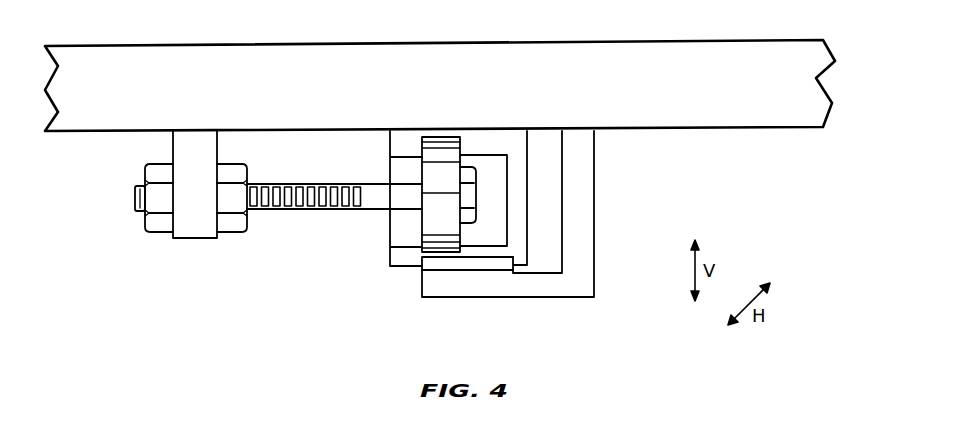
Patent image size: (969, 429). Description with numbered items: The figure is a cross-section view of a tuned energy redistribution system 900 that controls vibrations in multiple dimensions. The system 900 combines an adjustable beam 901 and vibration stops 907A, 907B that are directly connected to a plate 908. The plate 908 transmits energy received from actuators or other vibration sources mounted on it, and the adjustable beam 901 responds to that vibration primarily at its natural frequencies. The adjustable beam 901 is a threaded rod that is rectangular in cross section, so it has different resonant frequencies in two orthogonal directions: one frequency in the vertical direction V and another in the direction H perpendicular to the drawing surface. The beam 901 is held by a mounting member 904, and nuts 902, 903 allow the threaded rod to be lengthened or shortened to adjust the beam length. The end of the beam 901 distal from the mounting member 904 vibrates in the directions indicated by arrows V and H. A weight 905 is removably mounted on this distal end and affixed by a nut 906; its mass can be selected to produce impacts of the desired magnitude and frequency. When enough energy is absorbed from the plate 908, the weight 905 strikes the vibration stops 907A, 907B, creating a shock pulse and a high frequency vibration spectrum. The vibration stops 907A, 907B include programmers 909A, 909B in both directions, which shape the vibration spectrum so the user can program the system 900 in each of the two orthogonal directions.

The tuned energy redistribution system 900 is at (766, 234).
The adjustable beam 901 is at (303, 211).
The nut 902 is at (247, 157).
The nut 903 is at (145, 171).
The mounting member 904 is at (173, 143).
The weight 905 is at (422, 232).
The nut 906 is at (468, 200).
The vibration stop 907A is at (596, 186).
The vibration stop 907B is at (405, 142).
The plate 908 is at (722, 128).
The programmer 909A is at (423, 266).
The programmer 909B is at (490, 163).